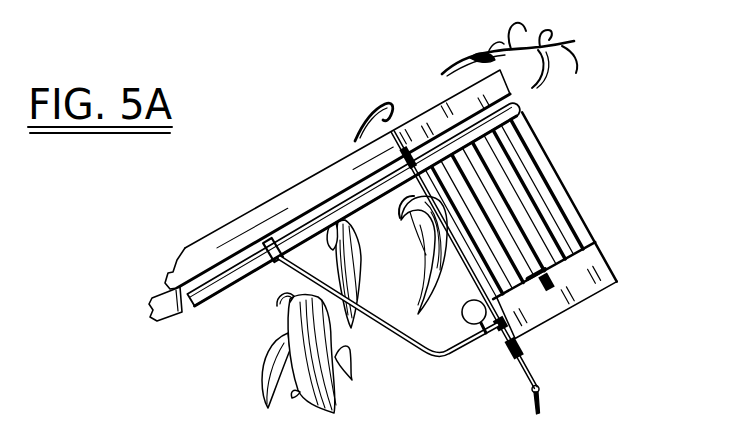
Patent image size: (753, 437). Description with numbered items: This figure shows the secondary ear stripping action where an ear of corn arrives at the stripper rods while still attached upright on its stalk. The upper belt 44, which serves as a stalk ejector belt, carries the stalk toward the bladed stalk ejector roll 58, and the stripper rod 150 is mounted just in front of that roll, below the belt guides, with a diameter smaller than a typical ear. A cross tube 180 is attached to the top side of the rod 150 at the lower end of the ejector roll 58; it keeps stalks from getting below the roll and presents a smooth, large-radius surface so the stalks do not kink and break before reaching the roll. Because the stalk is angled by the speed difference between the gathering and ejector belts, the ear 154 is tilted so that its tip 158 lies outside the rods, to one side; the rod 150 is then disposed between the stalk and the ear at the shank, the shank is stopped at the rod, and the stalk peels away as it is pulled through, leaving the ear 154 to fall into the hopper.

The upper belt 44 is at (518, 110).
The bladed stalk ejector roll 58 is at (548, 174).
The stripper rod 150 is at (433, 361).
The ear 154 is at (334, 367).
The tip 158 is at (278, 306).
The cross tube 180 is at (465, 320).